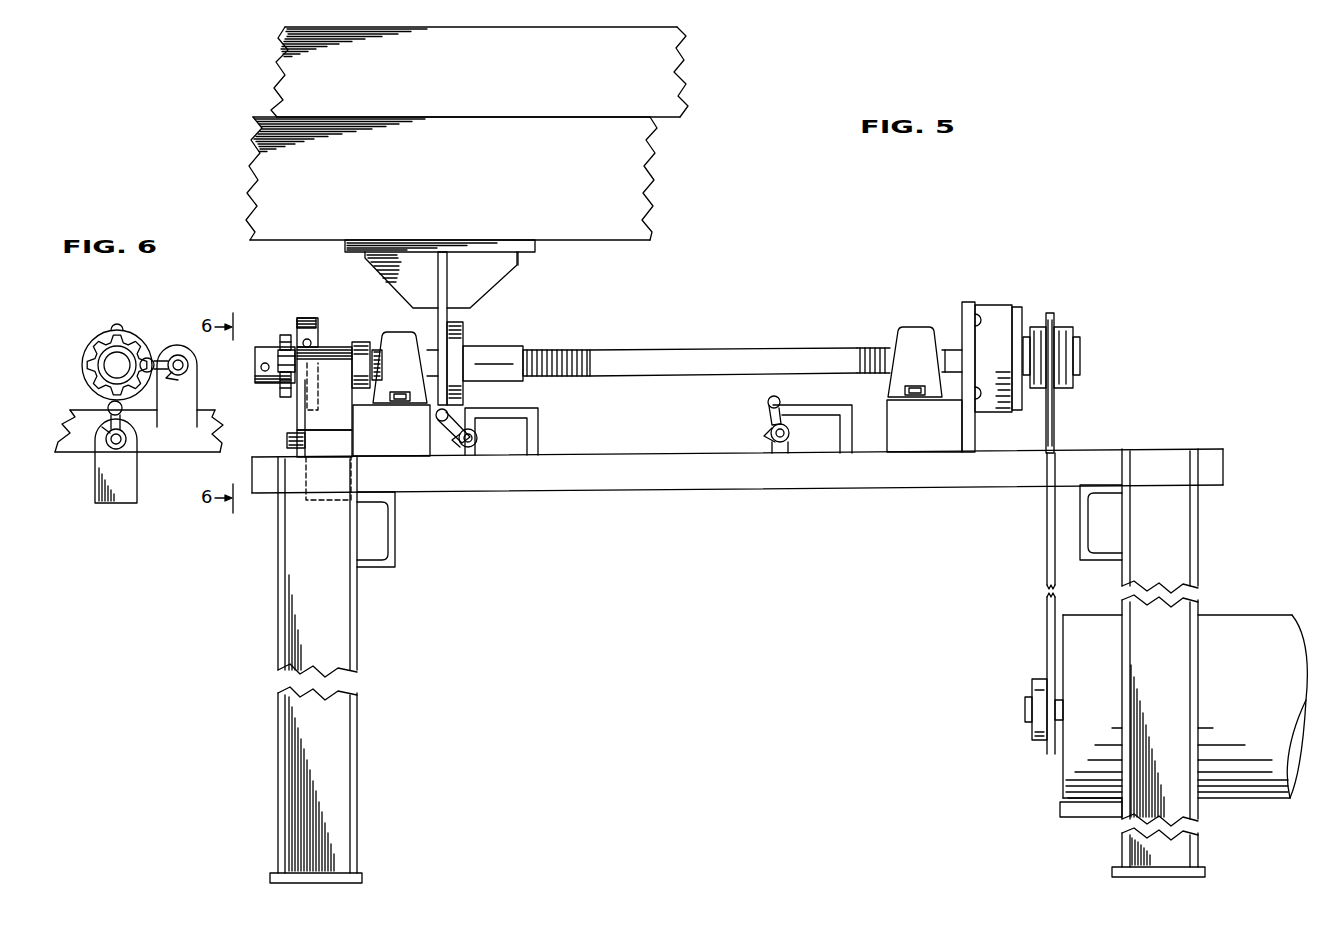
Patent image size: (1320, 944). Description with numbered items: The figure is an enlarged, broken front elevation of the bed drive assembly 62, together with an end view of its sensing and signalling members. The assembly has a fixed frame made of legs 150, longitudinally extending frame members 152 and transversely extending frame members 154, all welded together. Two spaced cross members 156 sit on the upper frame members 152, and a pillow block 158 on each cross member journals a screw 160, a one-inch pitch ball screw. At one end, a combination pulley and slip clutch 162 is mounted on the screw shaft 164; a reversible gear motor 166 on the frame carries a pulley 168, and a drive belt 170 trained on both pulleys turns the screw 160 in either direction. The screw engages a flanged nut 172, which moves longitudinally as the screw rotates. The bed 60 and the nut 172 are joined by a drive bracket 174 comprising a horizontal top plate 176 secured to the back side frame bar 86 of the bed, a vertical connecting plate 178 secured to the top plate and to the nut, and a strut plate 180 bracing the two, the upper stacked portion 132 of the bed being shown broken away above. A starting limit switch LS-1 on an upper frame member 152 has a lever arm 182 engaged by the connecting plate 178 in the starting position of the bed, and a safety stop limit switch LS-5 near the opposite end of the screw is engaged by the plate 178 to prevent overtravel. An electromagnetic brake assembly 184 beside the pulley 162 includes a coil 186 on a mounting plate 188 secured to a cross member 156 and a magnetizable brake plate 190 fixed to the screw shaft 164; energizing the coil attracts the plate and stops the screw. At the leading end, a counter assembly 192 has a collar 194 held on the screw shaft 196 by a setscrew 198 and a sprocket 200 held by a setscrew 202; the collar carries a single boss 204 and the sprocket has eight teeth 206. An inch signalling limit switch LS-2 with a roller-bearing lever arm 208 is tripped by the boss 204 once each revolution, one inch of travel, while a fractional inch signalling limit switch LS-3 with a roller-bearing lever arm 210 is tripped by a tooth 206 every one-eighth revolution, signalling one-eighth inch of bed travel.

In FIG. 5, the bed 60 is at (212, 118).
In FIG. 5, the bed drive assembly 62 is at (1015, 226).
In FIG. 5, the back side frame bar 86 is at (642, 160).
In FIG. 5, the upper slab / stack 132 is at (683, 88).
In FIG. 5, the legs 150 is at (354, 697).
In FIG. 5, the longitudinally extending frame members 152 is at (682, 483).
In FIG. 5, the transversely extending frame members 154 is at (378, 566).
In FIG. 5, the cross members 156 is at (407, 437).
In FIG. 6, the cross members 156 is at (214, 437).
In FIG. 5, the pillow block 158 is at (425, 330).
In FIG. 5, the screw 160 is at (672, 358).
In FIG. 5, the combination pulley and slip clutch 162 is at (1070, 330).
In FIG. 5, the screw shaft 164 is at (952, 347).
In FIG. 5, the reversible gear motor 166 is at (1250, 708).
In FIG. 5, the pulley 168 is at (1040, 727).
In FIG. 5, the drive belt 170 is at (1047, 525).
In FIG. 5, the flanged nut 172 is at (502, 359).
In FIG. 5, the drive bracket 174 is at (520, 284).
In FIG. 5, the horizontal top plate 176 is at (535, 246).
In FIG. 5, the vertical connecting plate 178 is at (447, 301).
In FIG. 5, the strut plate 180 is at (503, 269).
In FIG. 5, the lever arm 182 is at (452, 430).
In FIG. 5, the electromagnetic brake assembly 184 is at (1037, 307).
In FIG. 5, the coil 186 is at (992, 307).
In FIG. 5, the mounting plate 188 is at (968, 431).
In FIG. 5, the magnetizable brake plate 190 is at (1018, 305).
In FIG. 5, the counter assembly 192 is at (273, 333).
In FIG. 6, the counter assembly 192 is at (136, 308).
In FIG. 5, the collar 194 is at (318, 332).
In FIG. 6, the collar 194 is at (92, 341).
In FIG. 5, the screw shaft 196 is at (368, 360).
In FIG. 5, the setscrew 198 is at (309, 341).
In FIG. 5, the sprocket 200 is at (281, 382).
In FIG. 6, the sprocket 200 is at (84, 357).
In FIG. 5, the setscrew 202 is at (261, 367).
In FIG. 5, the boss 204 is at (303, 318).
In FIG. 6, the boss 204 is at (117, 325).
In FIG. 6, the teeth 206 is at (90, 364).
In FIG. 6, the roller-bearing lever arm 208 is at (74, 413).
In FIG. 6, the roller-bearing lever arm 210 is at (141, 358).
In FIG. 5, the starting limit switch LS-1 is at (517, 447).
In FIG. 5, the inch signalling limit switch LS-2 is at (310, 448).
In FIG. 6, the inch signalling limit switch LS-2 is at (95, 481).
In FIG. 5, the fractional inch signalling limit switch LS-3 is at (303, 408).
In FIG. 6, the fractional inch signalling limit switch LS-3 is at (177, 352).
In FIG. 5, the safety stop limit switch LS-5 is at (810, 447).